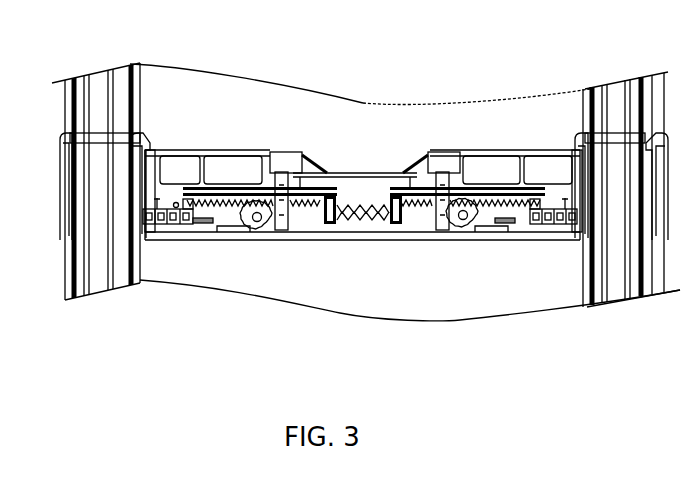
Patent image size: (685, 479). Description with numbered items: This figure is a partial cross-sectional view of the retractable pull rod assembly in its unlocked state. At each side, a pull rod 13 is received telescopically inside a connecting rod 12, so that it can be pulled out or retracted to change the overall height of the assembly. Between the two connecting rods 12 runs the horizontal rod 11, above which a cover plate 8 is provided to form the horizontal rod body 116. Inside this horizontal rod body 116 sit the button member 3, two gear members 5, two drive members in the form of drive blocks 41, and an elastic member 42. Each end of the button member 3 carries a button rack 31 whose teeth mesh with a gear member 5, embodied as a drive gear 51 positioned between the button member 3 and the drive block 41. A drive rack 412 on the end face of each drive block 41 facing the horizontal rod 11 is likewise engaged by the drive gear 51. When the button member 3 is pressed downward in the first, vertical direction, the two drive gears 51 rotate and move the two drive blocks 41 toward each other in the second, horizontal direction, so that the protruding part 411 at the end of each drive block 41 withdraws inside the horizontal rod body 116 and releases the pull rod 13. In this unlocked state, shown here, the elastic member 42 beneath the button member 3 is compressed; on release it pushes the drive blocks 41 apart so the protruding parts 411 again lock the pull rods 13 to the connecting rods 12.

The button member 3 is at (373, 173).
The gear member 5 is at (262, 229).
The cover plate 8 is at (284, 153).
The horizontal rod 11 is at (142, 137).
The connecting rod 12 is at (140, 265).
The pull rod 13 is at (150, 63).
The button rack 31 is at (452, 183).
The drive block 41 is at (222, 203).
The elastic member 42 is at (358, 232).
The drive gear 51 is at (466, 232).
The horizontal rod body 116 is at (524, 121).
The protruding part 411 is at (573, 229).
The drive rack 412 is at (494, 206).